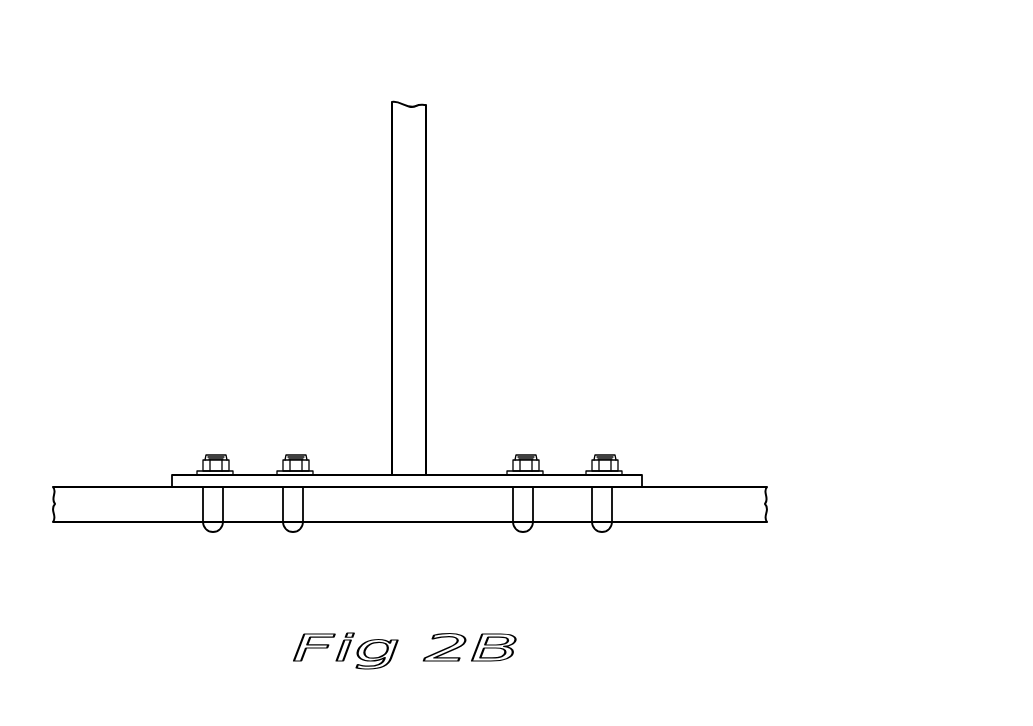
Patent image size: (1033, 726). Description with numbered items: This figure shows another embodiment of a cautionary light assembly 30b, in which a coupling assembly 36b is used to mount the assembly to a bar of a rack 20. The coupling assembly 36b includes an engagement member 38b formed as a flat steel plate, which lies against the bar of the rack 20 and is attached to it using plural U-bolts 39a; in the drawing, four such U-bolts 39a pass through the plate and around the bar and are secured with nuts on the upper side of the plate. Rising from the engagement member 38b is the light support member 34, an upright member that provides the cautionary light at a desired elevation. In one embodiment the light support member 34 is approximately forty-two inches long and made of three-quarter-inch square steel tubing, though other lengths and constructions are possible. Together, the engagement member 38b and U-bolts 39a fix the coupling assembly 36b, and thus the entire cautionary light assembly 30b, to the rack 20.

The cautionary light assembly 30b is at (693, 148).
The rack 20 is at (677, 512).
The light support member 34 is at (398, 257).
The coupling assembly 36b is at (407, 476).
The engagement member 38b is at (440, 482).
The U-bolts 39a is at (280, 512).